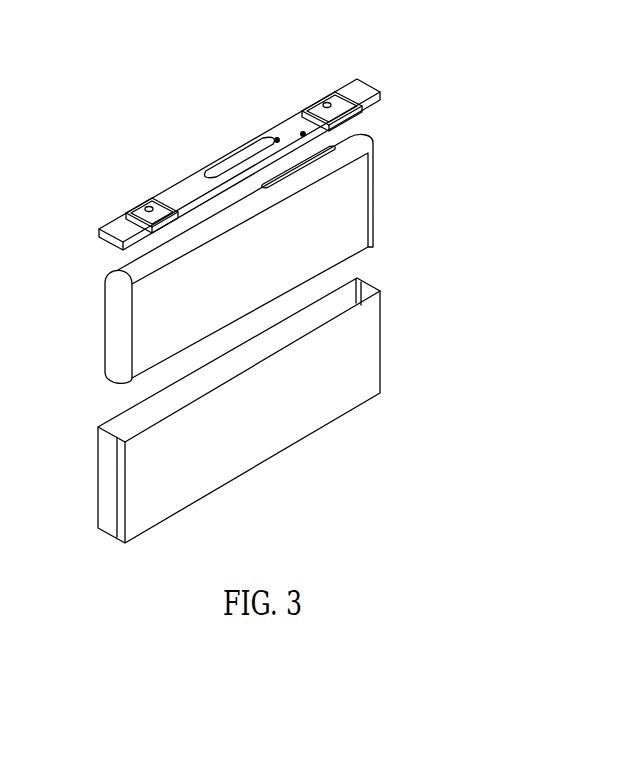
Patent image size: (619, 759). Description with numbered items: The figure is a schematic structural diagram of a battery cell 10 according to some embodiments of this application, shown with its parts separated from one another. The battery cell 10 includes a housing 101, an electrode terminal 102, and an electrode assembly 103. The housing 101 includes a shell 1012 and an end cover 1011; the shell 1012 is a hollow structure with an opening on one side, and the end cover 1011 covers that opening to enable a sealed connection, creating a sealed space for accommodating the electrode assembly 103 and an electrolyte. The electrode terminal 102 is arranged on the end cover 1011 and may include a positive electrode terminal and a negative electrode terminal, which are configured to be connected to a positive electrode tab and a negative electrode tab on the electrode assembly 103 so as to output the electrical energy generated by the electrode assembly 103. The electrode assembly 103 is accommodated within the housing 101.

The battery cell 10 is at (249, 89).
The housing 101 is at (477, 262).
The end cover 1011 is at (378, 107).
The shell 1012 is at (370, 338).
The electrode terminal 102 is at (157, 204).
The electrode assembly 103 is at (100, 352).